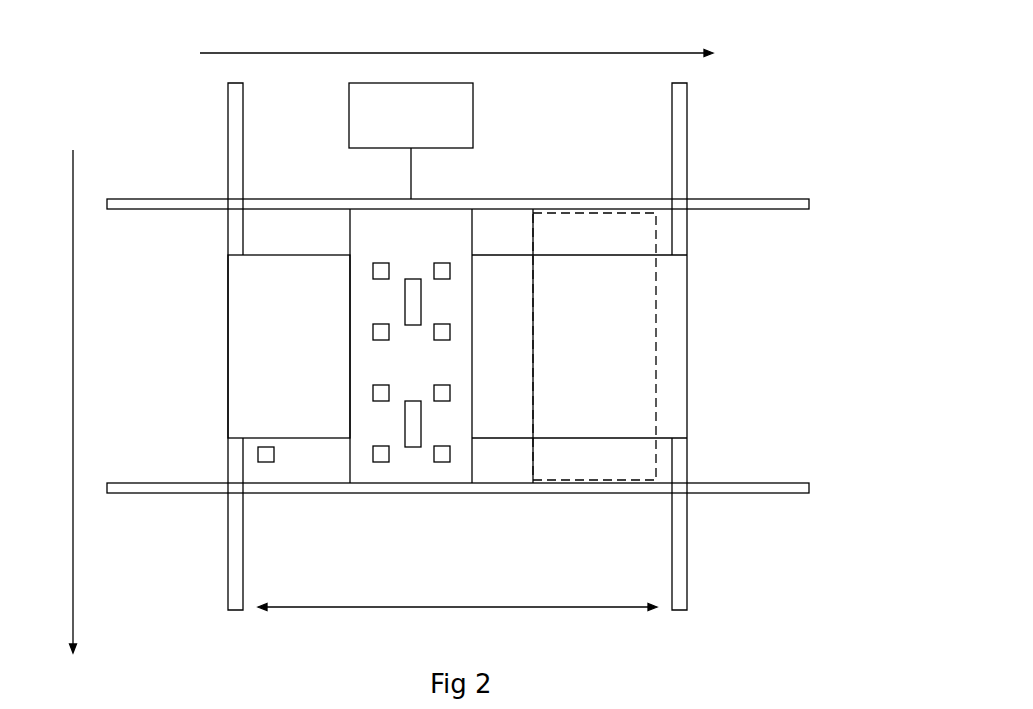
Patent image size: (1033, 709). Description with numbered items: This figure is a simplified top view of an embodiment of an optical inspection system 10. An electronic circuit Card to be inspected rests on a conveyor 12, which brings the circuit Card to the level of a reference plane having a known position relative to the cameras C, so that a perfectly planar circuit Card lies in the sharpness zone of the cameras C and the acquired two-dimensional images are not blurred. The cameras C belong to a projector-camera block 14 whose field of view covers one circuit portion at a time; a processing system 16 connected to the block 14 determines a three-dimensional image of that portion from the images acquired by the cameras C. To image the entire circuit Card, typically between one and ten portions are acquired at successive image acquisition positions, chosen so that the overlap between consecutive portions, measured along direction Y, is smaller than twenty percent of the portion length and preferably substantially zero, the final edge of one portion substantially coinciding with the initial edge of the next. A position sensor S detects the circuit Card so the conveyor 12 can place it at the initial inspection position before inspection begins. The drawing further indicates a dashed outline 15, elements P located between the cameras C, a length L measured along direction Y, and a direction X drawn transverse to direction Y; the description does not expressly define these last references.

The test fixture assembly 10 is at (795, 48).
The conveyor 12 is at (243, 115).
The projector-camera block 14 is at (455, 203).
The movable carrier (displaced position) 15 is at (592, 199).
The processing system 16 is at (473, 107).
The position sensor S is at (257, 453).
The electronic circuit Card is at (295, 440).
The cameras C is at (375, 463).
The pins P is at (415, 449).
The length L is at (457, 621).
The X axis X is at (60, 405).
The direction Y is at (458, 37).